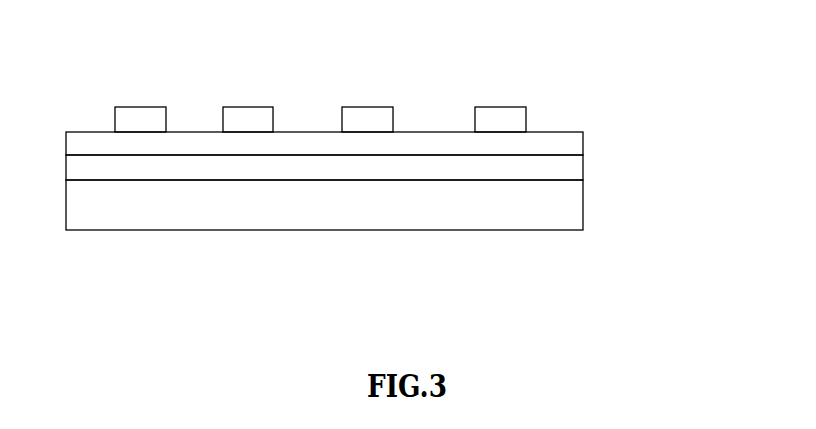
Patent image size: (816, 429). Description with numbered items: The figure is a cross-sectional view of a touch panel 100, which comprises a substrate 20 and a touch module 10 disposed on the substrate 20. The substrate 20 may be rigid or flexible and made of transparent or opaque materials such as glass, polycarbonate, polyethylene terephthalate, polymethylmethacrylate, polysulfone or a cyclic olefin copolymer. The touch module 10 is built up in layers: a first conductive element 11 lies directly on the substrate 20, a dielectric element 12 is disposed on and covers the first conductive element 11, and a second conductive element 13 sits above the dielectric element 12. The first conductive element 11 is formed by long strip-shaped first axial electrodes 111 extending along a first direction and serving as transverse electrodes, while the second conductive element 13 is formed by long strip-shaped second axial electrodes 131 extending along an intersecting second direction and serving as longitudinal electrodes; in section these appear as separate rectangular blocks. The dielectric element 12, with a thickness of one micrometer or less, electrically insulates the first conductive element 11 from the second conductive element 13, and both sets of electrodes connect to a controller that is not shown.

The touch panel 100 is at (102, 34).
The touch module 10 is at (710, 80).
The second conductive element 13 is at (381, 111).
The second axial electrodes 131 is at (526, 107).
The dielectric element 12 is at (583, 142).
The first conductive element 11 is at (379, 172).
The first axial electrodes 111 is at (583, 171).
The substrate 20 is at (583, 214).